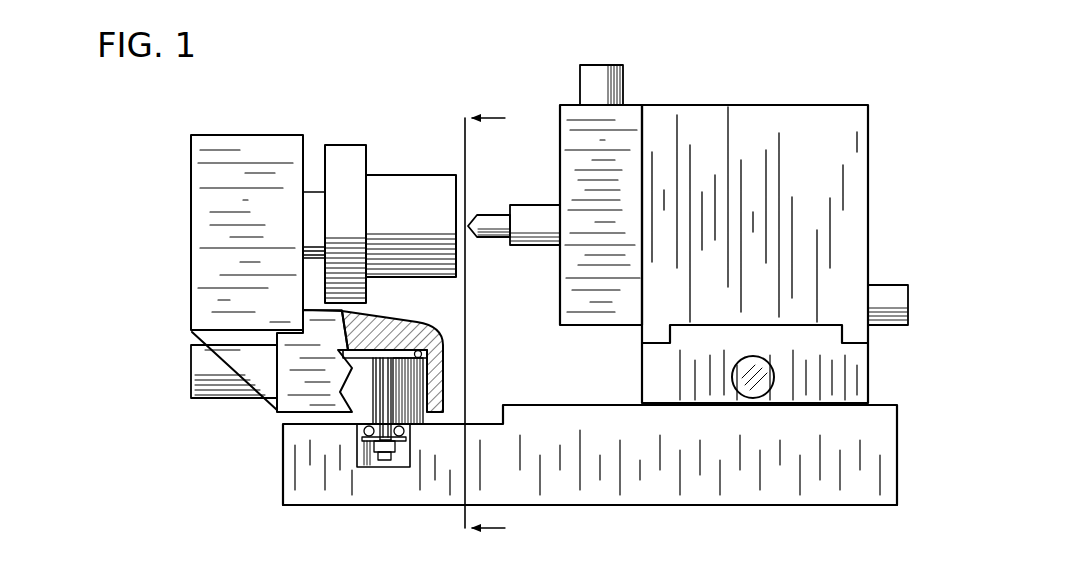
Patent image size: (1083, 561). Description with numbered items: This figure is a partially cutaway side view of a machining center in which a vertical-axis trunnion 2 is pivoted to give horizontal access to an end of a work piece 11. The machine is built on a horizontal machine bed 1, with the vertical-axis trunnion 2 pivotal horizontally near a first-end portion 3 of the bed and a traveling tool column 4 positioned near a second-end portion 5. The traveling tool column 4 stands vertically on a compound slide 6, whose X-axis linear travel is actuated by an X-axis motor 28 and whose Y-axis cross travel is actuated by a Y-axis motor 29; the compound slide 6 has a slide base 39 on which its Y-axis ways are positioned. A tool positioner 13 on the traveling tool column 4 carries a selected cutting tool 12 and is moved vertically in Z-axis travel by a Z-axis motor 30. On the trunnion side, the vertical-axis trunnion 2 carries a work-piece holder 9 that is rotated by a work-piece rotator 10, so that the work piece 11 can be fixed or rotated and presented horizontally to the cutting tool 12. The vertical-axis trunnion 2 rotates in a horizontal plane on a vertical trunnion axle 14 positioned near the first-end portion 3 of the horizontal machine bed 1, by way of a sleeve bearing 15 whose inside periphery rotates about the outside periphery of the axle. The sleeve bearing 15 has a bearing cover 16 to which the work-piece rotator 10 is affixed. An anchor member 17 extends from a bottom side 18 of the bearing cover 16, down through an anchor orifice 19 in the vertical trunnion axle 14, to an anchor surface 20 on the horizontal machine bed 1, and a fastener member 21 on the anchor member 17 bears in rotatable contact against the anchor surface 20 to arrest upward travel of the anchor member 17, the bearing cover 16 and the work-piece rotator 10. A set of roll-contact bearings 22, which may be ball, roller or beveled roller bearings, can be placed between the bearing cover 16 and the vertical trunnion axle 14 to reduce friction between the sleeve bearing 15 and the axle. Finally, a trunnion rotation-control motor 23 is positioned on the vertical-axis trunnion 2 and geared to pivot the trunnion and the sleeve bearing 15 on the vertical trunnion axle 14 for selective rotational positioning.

The horizontal machine bed 1 is at (655, 507).
The vertical-axis trunnion 2 is at (222, 418).
The first-end portion 3 is at (283, 468).
The traveling tool column 4 is at (560, 105).
The second-end portion 5 is at (897, 455).
The compound slide 6 is at (895, 82).
The work-piece holder 9 is at (343, 168).
The work-piece rotator 10 is at (241, 134).
The work piece 11 is at (398, 186).
The cutting tool 12 is at (494, 218).
The tool positioner 13 is at (531, 218).
The vertical trunnion axle 14 is at (403, 413).
The sleeve bearing 15 is at (398, 400).
The bearing cover 16 is at (388, 316).
The anchor member 17 is at (389, 382).
The bottom side 18 is at (421, 351).
The anchor orifice 19 is at (416, 416).
The anchor surface 20 is at (357, 428).
The fastener member 21 is at (393, 468).
The roll-contact bearings 22 is at (438, 342).
The trunnion rotation-control motor 23 is at (208, 369).
The X-axis motor 28 is at (745, 375).
The Y-axis motor 29 is at (884, 285).
The Z-axis motor 30 is at (622, 67).
The slide base 39 is at (805, 358).